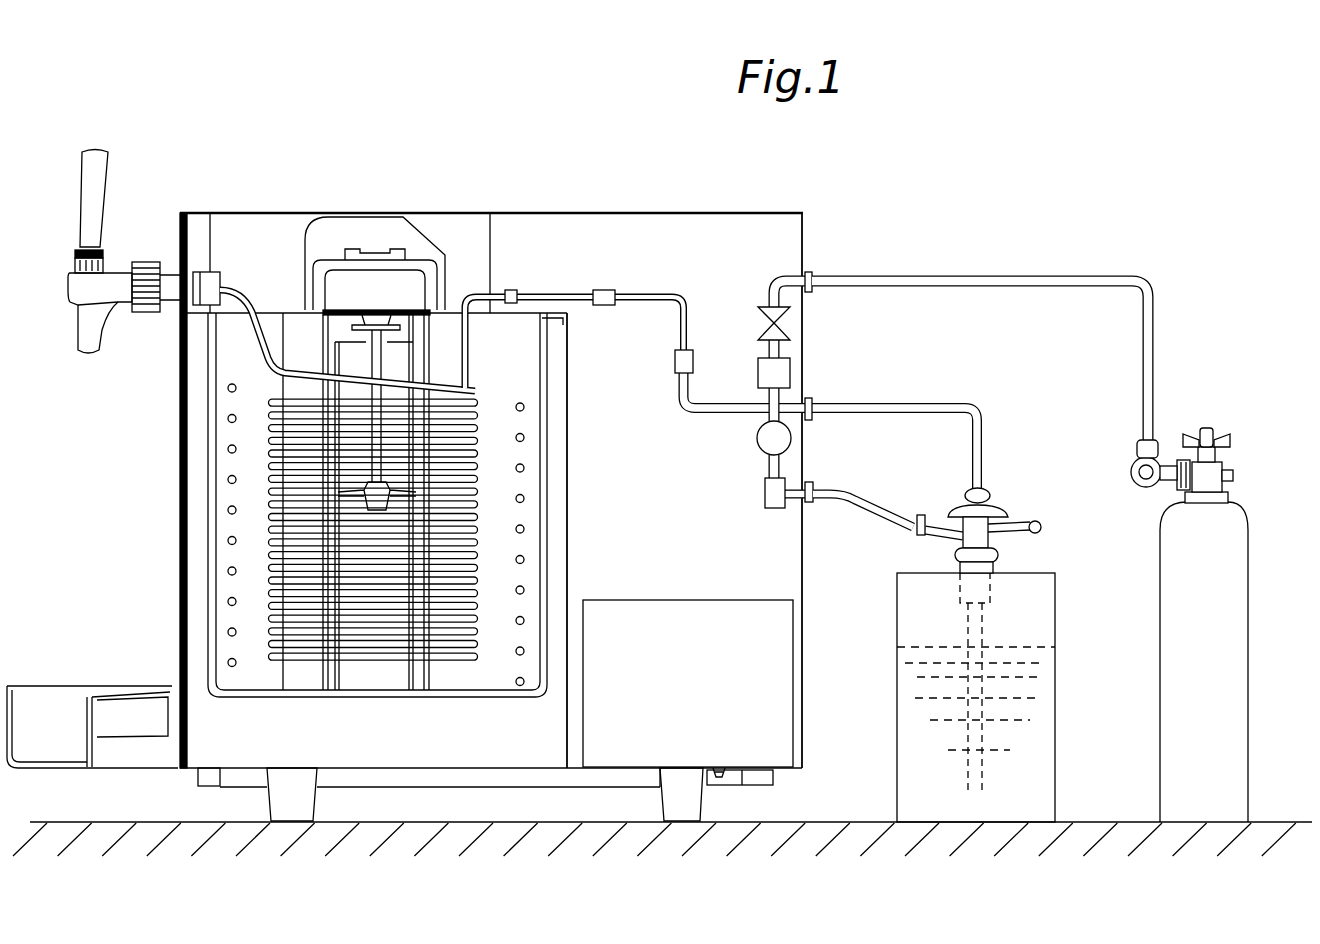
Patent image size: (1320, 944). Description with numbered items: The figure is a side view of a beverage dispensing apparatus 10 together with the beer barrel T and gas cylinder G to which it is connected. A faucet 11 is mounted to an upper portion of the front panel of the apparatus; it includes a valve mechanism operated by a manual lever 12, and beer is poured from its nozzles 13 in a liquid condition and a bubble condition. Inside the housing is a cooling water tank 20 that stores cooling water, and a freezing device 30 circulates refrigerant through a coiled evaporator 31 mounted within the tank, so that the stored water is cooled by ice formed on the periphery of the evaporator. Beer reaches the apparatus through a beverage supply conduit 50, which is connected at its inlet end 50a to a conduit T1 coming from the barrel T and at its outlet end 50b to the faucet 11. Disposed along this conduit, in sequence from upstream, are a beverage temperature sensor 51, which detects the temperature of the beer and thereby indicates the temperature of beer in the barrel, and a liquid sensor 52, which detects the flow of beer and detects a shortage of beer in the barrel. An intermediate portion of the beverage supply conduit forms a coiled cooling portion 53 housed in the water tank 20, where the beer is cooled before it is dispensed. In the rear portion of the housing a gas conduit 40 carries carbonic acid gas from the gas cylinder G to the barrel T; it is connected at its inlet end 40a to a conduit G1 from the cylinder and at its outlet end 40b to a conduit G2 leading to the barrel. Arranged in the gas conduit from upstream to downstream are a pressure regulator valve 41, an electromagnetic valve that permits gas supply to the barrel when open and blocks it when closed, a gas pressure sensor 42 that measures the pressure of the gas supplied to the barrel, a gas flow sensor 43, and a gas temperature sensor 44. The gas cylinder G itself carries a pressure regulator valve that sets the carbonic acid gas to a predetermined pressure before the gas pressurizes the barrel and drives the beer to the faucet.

The beverage dispensing apparatus 10 is at (590, 198).
The faucet 11 is at (113, 282).
The manual lever 12 is at (97, 172).
The nozzles 13 is at (97, 337).
The cooling water tank 20 is at (550, 362).
The freezing device 30 is at (650, 620).
The coiled evaporator 31 is at (526, 434).
The gas conduit 40 is at (773, 280).
The inlet end 40a is at (805, 270).
The outlet end 40b is at (807, 507).
The pressure regulator valve 41 is at (792, 313).
The gas pressure sensor 42 is at (790, 366).
The gas flow sensor 43 is at (793, 440).
The gas temperature sensor 44 is at (765, 493).
The beverage supply conduit 50 is at (648, 293).
The inlet end 50a is at (810, 402).
The outlet end 50b is at (227, 287).
The beverage temperature sensor 51 is at (695, 357).
The liquid sensor 52 is at (603, 288).
The coiled cooling portion 53 is at (480, 394).
The gas cylinder G is at (1230, 523).
The conduit G1 is at (967, 272).
The conduit G2 is at (868, 497).
The beer barrel T is at (1033, 587).
The conduit T1 is at (943, 402).